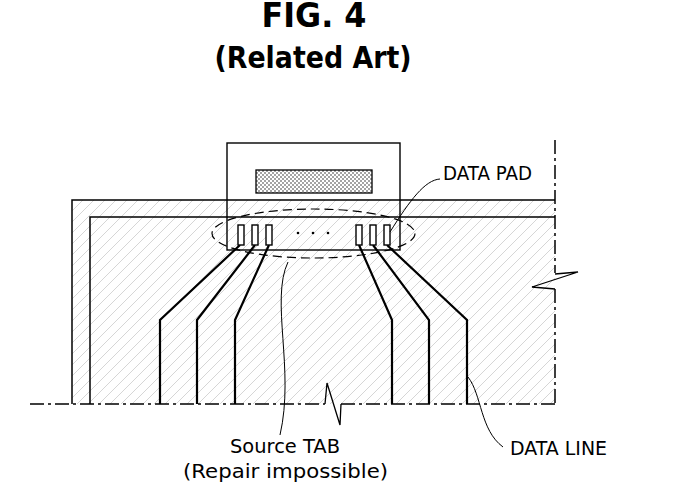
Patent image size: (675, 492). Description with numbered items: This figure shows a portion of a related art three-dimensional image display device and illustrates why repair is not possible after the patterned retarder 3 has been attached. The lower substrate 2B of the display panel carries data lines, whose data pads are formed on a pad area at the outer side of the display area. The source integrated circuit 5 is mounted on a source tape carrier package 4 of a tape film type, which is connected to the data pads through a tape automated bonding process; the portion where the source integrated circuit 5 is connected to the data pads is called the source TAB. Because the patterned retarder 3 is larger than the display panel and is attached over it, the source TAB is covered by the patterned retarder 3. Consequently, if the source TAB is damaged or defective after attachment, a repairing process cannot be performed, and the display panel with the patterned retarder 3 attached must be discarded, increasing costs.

The patterned retarder 3 is at (110, 200).
The lower substrate 2B is at (160, 217).
The source tape carrier package 4 is at (344, 143).
The source integrated circuit 5 is at (283, 170).